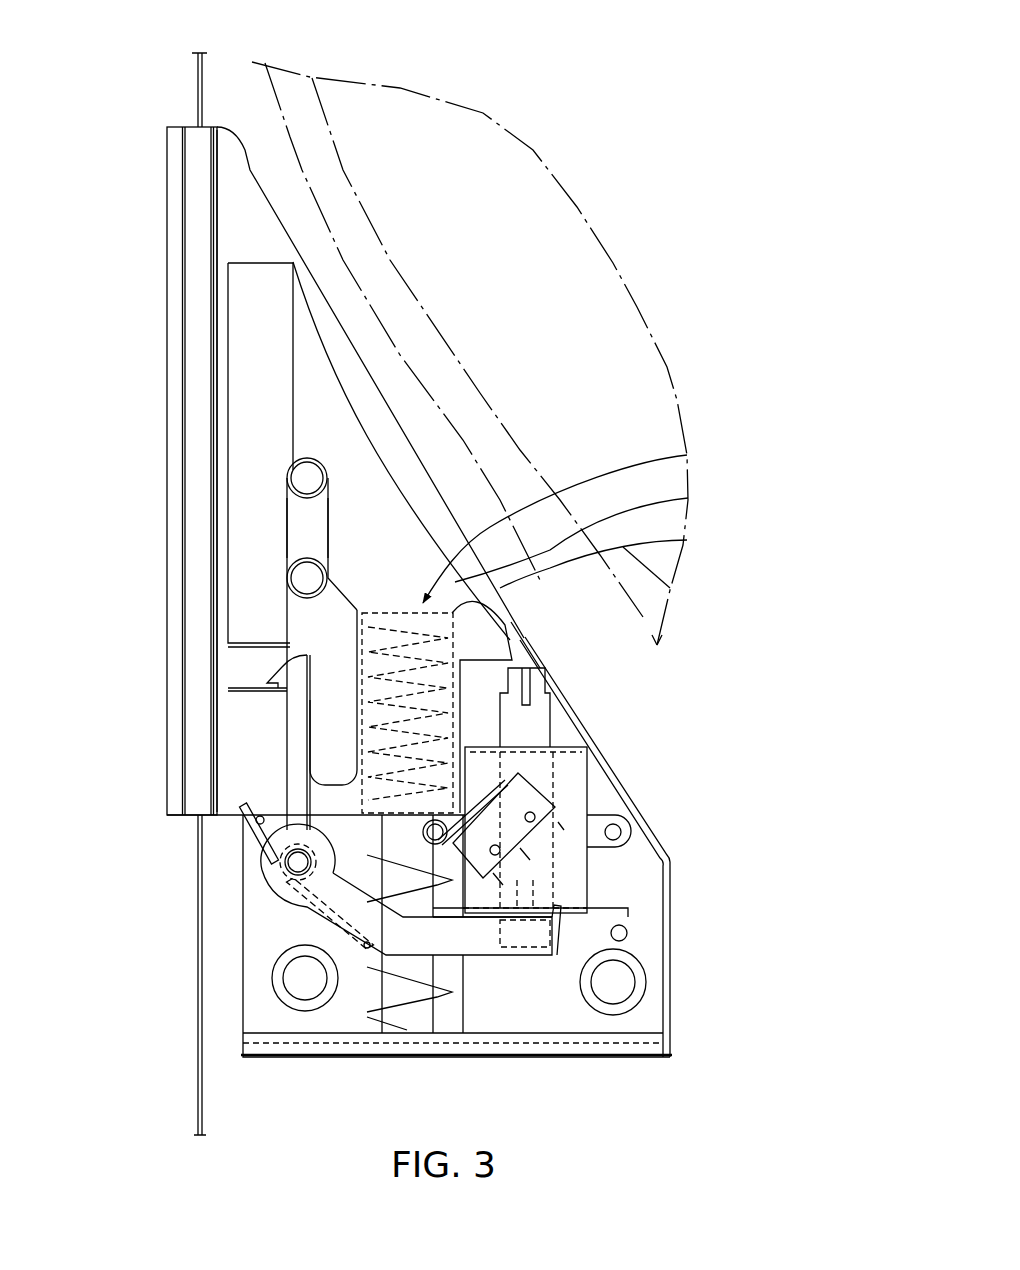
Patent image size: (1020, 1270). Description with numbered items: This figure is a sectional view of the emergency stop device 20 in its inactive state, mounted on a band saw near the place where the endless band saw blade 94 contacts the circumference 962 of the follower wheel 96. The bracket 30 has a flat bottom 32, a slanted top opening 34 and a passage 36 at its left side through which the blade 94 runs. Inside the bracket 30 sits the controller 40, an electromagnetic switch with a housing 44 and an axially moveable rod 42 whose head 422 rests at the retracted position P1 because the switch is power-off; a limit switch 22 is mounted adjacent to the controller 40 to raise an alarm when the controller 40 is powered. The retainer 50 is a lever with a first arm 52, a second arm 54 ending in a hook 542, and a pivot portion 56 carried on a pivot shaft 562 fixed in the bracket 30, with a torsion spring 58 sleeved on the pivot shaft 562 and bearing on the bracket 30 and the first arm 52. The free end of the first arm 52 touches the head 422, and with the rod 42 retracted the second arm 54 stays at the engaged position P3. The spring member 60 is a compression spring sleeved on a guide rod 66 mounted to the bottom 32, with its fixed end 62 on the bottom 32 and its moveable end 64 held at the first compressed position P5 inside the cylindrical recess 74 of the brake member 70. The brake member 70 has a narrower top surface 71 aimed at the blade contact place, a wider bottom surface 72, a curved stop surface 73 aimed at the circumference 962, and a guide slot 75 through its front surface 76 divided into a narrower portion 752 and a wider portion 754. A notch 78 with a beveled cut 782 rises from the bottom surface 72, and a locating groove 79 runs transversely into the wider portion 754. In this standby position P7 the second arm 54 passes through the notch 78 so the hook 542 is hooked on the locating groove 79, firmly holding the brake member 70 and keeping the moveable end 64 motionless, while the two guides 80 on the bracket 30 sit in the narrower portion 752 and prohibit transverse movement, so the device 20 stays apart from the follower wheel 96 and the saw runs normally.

The emergency stop device 20 is at (123, 100).
The endless band saw blade 94 is at (200, 78).
The passage 36 is at (177, 148).
The brake member 70 is at (252, 247).
The top surface 71 is at (236, 263).
The front surface 76 is at (245, 330).
The standby position P7 is at (225, 300).
The guide slot 75 is at (277, 468).
The guides 80 is at (287, 492).
The relatively narrower portion 752 is at (287, 527).
The relatively wider portion 754 is at (287, 622).
The locating groove 79 is at (240, 667).
The hook 542 is at (270, 678).
The engaged position P3 is at (278, 713).
The second arm 54 is at (287, 750).
The notch 78 is at (327, 805).
The bottom surface 72 is at (245, 825).
The beveled cut 782 is at (280, 845).
The pivot shaft 562 is at (280, 868).
The pivot portion 56 is at (268, 878).
The retainer 50 is at (278, 898).
The torsion spring 58 is at (317, 903).
The spring member 60 is at (367, 1020).
The guide rod 66 is at (403, 1020).
The fixed end 62 is at (450, 1043).
The first arm 52 is at (477, 957).
The head 422 is at (527, 947).
The bottom 32 is at (650, 1050).
The retracted position P1 is at (562, 943).
The bracket 30 is at (662, 842).
The housing 44 is at (625, 845).
The axially moveable rod 42 is at (595, 912).
The controller 40 is at (563, 740).
The limit switch 22 is at (535, 792).
The cylindrical recess 74 is at (513, 662).
The moveable end 64 is at (483, 602).
The circumference 962 is at (643, 620).
The follower wheel 96 is at (638, 307).
The stop surface 73 is at (690, 456).
The first compressed position P5 is at (690, 498).
The slanted top opening 34 is at (690, 540).